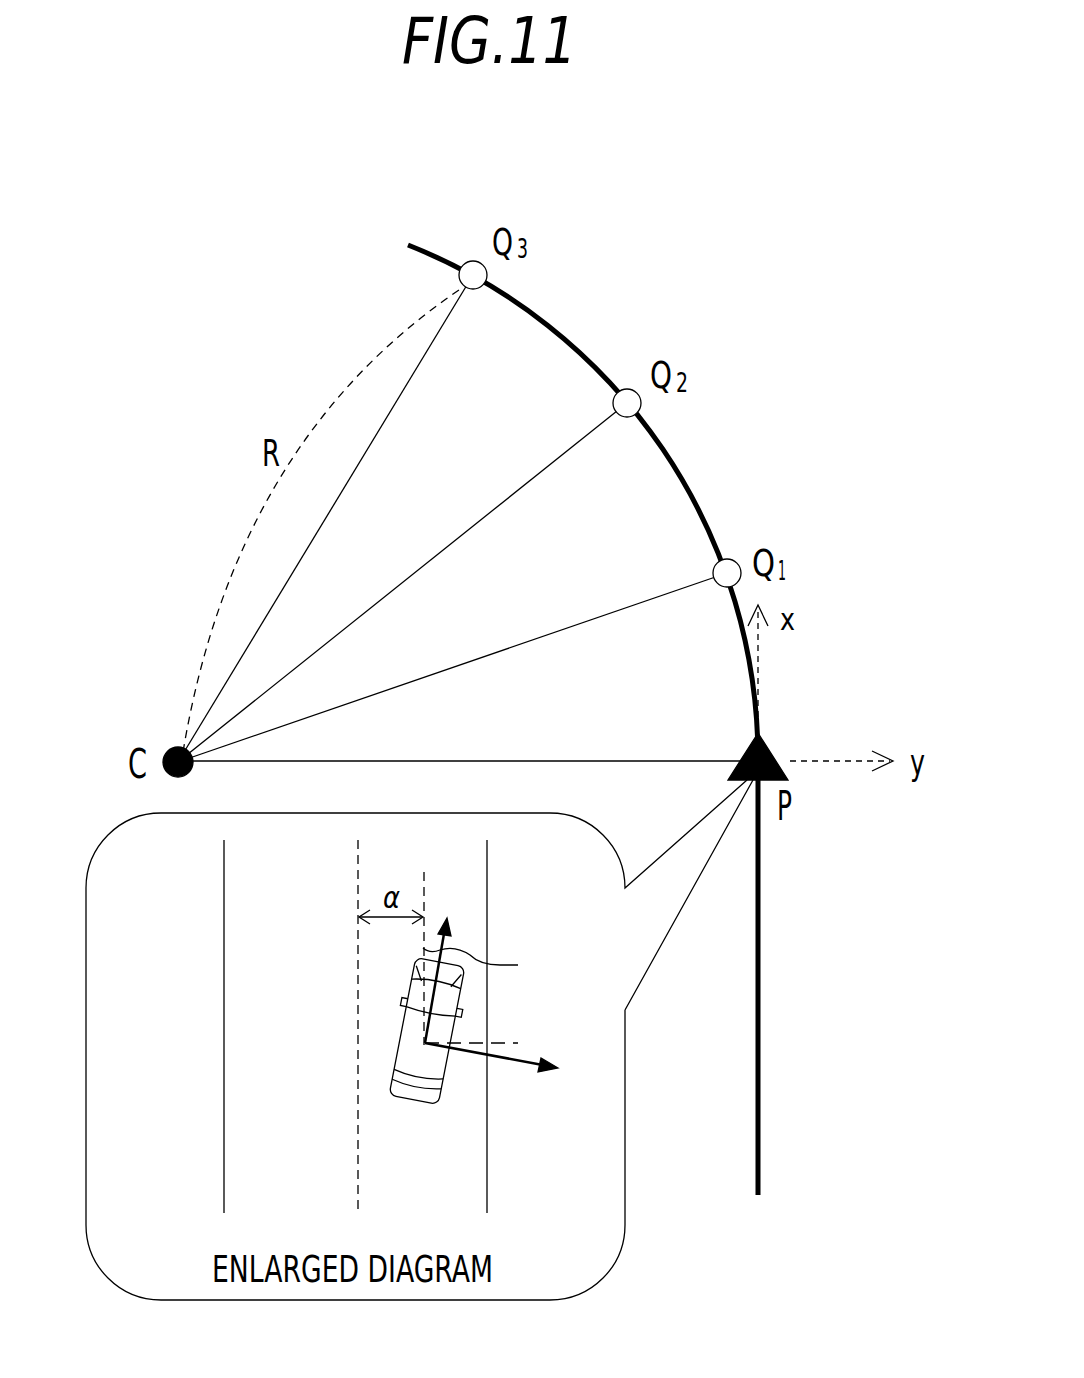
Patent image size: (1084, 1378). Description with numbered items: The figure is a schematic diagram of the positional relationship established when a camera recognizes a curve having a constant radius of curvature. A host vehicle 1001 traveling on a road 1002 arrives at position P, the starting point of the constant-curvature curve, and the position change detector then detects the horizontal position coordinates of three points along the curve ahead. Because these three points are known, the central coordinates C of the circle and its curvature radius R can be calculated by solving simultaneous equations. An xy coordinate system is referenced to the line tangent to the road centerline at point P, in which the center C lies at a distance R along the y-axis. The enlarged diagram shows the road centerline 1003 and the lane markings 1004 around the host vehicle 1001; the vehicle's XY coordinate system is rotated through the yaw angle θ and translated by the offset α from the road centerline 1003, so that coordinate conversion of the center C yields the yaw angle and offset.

The host vehicle 1001 is at (748, 755).
The road 1002 is at (760, 974).
The road centerline 1003 is at (358, 1083).
The lane markings 1004 is at (224, 1083).